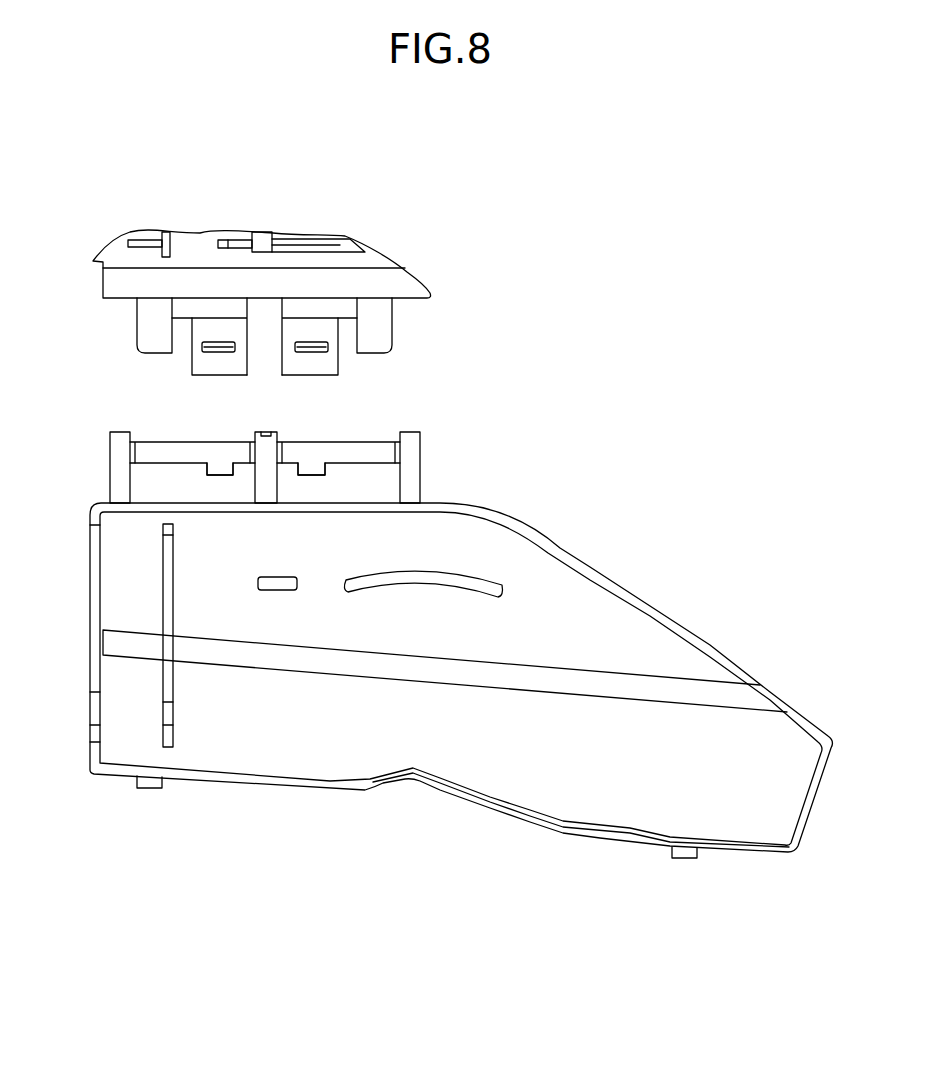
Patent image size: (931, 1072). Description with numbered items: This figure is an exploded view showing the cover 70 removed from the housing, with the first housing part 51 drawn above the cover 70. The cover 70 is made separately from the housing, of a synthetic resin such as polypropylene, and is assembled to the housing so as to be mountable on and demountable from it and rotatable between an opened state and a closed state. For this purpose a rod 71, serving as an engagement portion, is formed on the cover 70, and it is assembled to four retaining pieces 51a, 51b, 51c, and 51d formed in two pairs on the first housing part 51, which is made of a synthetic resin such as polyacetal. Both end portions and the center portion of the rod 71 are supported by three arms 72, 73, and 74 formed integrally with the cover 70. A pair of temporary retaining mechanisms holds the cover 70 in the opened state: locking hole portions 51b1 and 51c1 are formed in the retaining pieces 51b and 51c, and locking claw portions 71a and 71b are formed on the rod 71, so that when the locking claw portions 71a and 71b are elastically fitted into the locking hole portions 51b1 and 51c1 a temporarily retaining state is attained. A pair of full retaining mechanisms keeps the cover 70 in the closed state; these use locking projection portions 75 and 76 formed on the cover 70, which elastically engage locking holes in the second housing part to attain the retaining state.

The first housing part 51 is at (108, 284).
The retaining piece 51a is at (143, 335).
The retaining piece 51b is at (217, 375).
The locking hole portion 51b1 is at (200, 346).
The retaining piece 51c is at (310, 375).
The locking hole portion 51c1 is at (330, 346).
The retaining piece 51d is at (385, 335).
The cover 70 is at (640, 622).
The rod 71 is at (373, 463).
The locking claw portion 71a is at (222, 476).
The locking claw portion 71b is at (304, 477).
The arm 72 is at (110, 468).
The arm 73 is at (263, 430).
The arm 74 is at (421, 447).
The locking projection portion 75 is at (148, 789).
The locking projection portion 76 is at (684, 859).